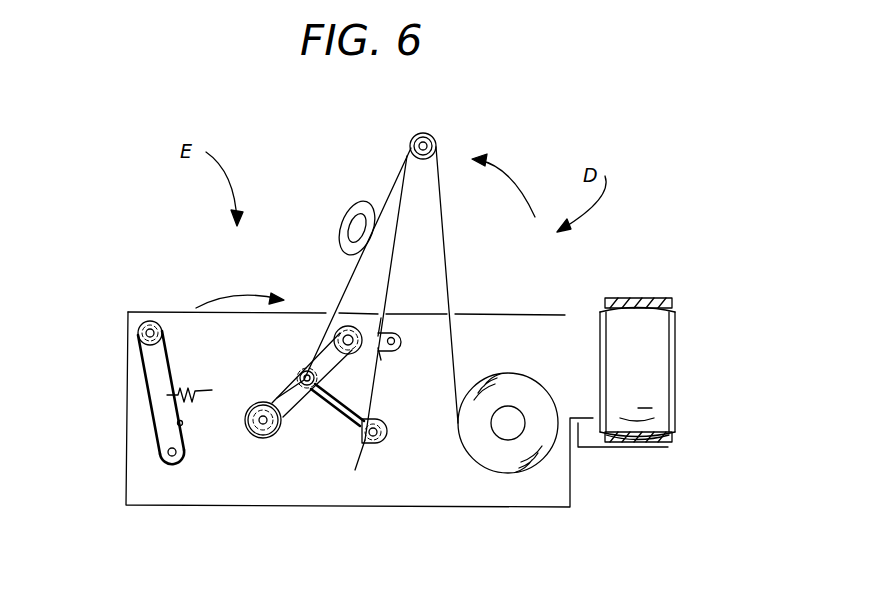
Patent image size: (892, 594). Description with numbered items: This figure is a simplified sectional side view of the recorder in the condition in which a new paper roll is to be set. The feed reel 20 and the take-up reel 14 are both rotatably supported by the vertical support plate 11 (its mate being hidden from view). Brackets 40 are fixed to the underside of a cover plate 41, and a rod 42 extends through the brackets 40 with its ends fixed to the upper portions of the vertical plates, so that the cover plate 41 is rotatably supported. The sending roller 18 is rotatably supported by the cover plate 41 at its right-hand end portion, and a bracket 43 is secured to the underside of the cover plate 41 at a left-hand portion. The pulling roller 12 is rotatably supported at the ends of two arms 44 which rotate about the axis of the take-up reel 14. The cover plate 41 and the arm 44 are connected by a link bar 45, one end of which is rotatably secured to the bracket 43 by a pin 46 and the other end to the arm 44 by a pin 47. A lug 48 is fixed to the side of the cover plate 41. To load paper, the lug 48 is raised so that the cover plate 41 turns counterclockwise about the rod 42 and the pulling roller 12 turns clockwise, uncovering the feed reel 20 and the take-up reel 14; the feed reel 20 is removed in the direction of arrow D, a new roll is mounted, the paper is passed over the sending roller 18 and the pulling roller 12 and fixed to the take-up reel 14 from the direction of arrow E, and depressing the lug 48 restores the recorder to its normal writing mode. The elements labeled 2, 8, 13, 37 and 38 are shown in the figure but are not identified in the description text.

The cap 2 is at (660, 300).
The cylinder 8 is at (662, 374).
The vertical support plate 11 is at (392, 488).
The pulling roller 12 is at (372, 312).
The pulley 13 is at (137, 333).
The take-up reel 14 is at (268, 440).
The sending roller 18 is at (426, 158).
The feed reel 20 is at (505, 428).
The lever arm 37 is at (160, 423).
The spring 38 is at (198, 400).
The bracket 40 is at (398, 346).
The cover plate 41 is at (392, 266).
The rod 42 is at (388, 356).
The bracket 43 is at (386, 438).
The arm 44 is at (278, 396).
The link bar 45 is at (330, 400).
The pin 46 is at (362, 446).
The pin 47 is at (305, 370).
The lug 48 is at (355, 212).